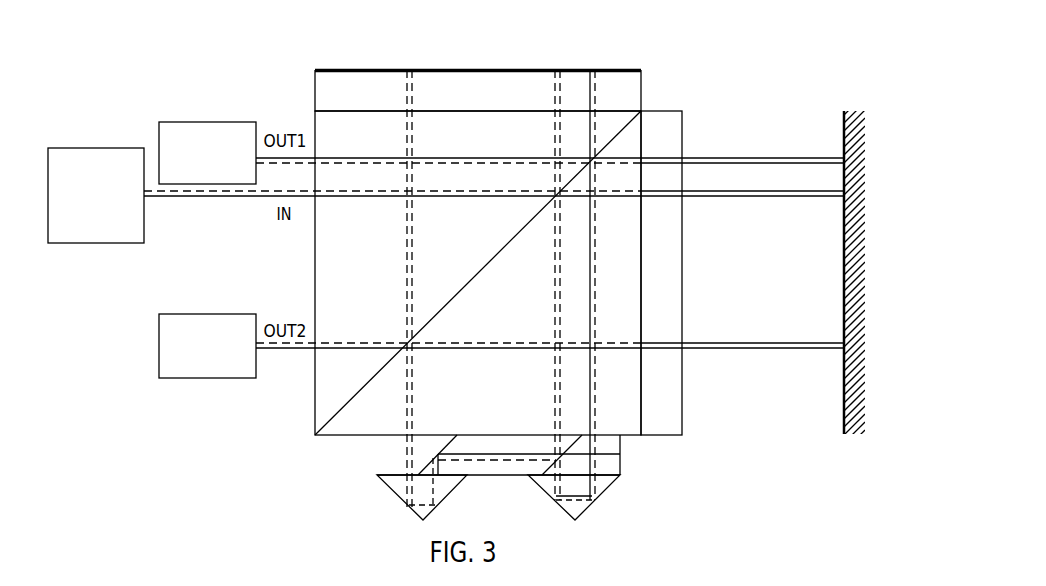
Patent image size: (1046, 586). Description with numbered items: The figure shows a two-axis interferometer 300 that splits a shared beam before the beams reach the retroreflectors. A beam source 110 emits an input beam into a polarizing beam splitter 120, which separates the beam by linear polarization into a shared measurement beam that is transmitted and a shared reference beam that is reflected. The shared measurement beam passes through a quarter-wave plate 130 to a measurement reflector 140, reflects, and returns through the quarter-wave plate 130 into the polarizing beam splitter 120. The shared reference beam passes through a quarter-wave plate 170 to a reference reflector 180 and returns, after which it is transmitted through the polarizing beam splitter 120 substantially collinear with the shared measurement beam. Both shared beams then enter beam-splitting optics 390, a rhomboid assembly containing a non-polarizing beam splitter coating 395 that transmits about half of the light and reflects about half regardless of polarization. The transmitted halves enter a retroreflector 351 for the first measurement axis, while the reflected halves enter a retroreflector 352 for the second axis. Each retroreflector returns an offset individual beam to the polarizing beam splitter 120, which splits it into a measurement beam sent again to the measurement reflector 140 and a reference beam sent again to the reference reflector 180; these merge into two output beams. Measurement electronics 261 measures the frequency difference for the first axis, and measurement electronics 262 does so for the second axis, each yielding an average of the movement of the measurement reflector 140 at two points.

The two-axis interferometer 300 is at (177, 43).
The beam source 110 is at (80, 230).
The measurement electronics 261 is at (192, 176).
The measurement electronics 262 is at (192, 370).
The polarizing beam splitter 120 is at (473, 403).
The quarter-wave plate 130 is at (658, 435).
The measurement reflector 140 is at (843, 130).
The quarter-wave plate 170 is at (315, 90).
The reference reflector 180 is at (580, 70).
The beam-splitting optics 390 is at (478, 475).
The non-polarizing beam splitter coating 395 is at (565, 449).
The retroreflector 351 is at (610, 485).
The retroreflector 352 is at (387, 485).